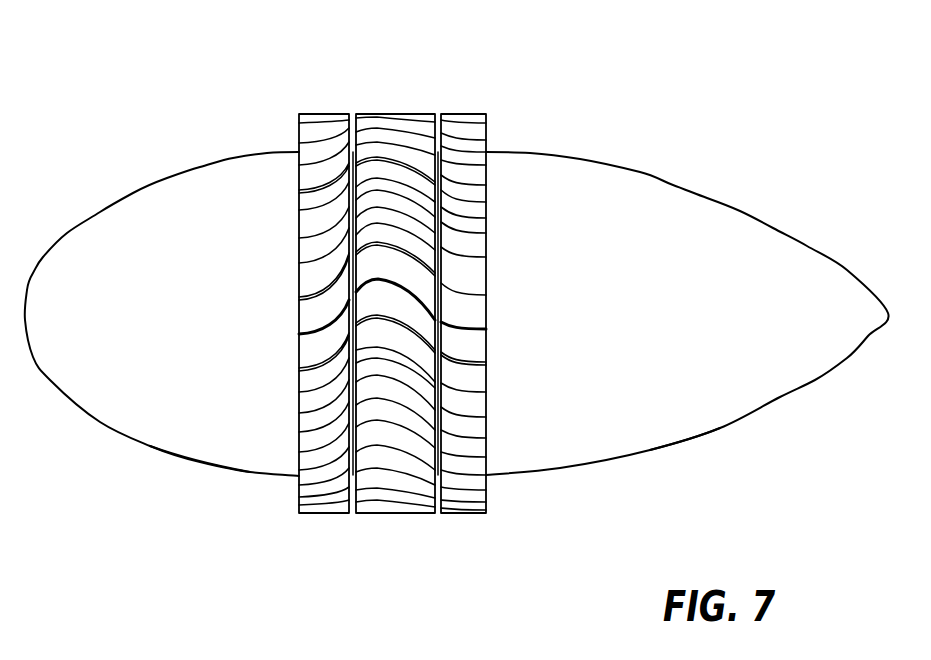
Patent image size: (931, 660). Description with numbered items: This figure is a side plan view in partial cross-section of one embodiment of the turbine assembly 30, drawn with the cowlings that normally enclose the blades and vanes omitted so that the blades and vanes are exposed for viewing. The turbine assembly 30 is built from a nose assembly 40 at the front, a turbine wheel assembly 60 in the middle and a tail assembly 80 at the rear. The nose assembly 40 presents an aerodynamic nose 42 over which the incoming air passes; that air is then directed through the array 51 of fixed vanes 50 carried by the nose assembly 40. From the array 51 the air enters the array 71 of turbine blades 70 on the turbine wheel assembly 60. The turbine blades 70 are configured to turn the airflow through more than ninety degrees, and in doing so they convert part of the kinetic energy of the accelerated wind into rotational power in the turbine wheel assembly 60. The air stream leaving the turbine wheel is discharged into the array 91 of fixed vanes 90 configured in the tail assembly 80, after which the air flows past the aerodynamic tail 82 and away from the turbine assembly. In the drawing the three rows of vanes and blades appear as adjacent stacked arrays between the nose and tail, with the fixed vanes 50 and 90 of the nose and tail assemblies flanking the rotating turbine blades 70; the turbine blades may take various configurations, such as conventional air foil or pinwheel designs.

The turbine assembly 30 is at (85, 479).
The nose assembly 40 is at (152, 146).
The aerodynamic nose 42 is at (210, 417).
The fixed vanes 50 is at (320, 338).
The array of fixed vanes 51 is at (328, 514).
The turbine wheel assembly 60 is at (388, 93).
The turbine blades 70 is at (395, 280).
The array of turbine blades 71 is at (405, 514).
The tail assembly 80 is at (707, 164).
The aerodynamic tail 82 is at (658, 413).
The fixed vanes 90 is at (482, 327).
The array of fixed vanes 91 is at (468, 514).